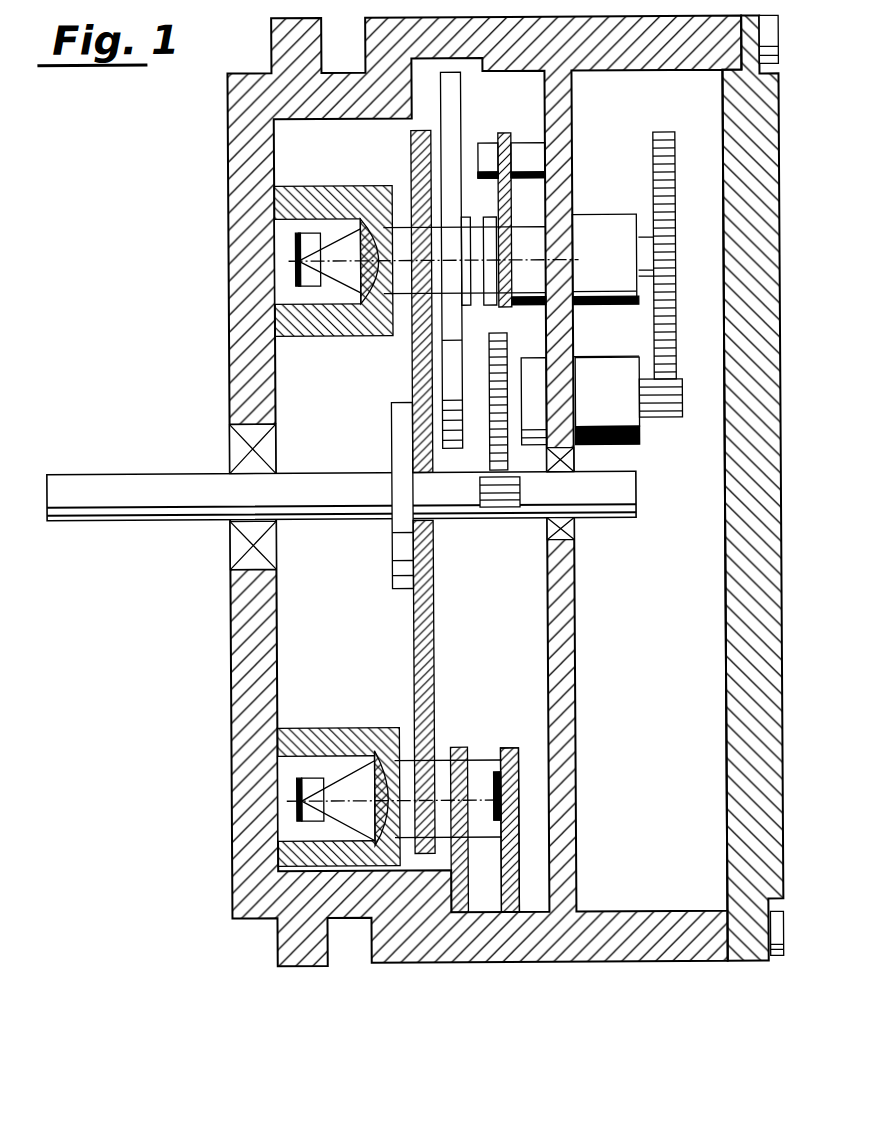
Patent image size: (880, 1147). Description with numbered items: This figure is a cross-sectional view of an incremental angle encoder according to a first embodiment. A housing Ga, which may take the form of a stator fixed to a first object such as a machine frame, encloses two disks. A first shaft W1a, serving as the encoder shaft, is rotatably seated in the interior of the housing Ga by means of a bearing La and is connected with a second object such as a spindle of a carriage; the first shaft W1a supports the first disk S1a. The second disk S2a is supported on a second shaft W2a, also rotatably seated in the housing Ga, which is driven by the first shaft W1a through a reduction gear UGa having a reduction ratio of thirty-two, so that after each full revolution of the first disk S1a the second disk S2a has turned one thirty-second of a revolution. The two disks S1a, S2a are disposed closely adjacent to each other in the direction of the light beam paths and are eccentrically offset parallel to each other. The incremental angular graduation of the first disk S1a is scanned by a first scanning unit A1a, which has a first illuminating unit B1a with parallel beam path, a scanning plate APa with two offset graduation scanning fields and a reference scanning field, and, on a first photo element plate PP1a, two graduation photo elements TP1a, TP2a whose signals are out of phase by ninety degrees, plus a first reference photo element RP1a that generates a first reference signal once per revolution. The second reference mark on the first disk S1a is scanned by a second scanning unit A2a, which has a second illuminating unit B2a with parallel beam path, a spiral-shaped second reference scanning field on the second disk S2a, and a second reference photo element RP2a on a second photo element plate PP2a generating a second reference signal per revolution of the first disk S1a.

The housing Ga is at (622, 945).
The first shaft W1a is at (129, 499).
The bearing La is at (264, 448).
The first disk S1a is at (412, 160).
The second disk S2a is at (449, 123).
The second scanning unit A2a is at (374, 311).
The second illuminating unit B2a is at (333, 288).
The second reference photo element RP2a is at (517, 268).
The second photo element plate PP2a is at (517, 222).
The second shaft W2a is at (650, 278).
The reduction gear UGa is at (684, 262).
The first scanning unit A1a is at (336, 744).
The first illuminating unit B1a is at (338, 778).
The scanning plate APa is at (456, 905).
The first reference photo element RP1a is at (497, 778).
The first photo element plate PP1a is at (509, 912).
The graduation photo element TP1a is at (517, 823).
The graduation photo element TP2a is at (517, 823).